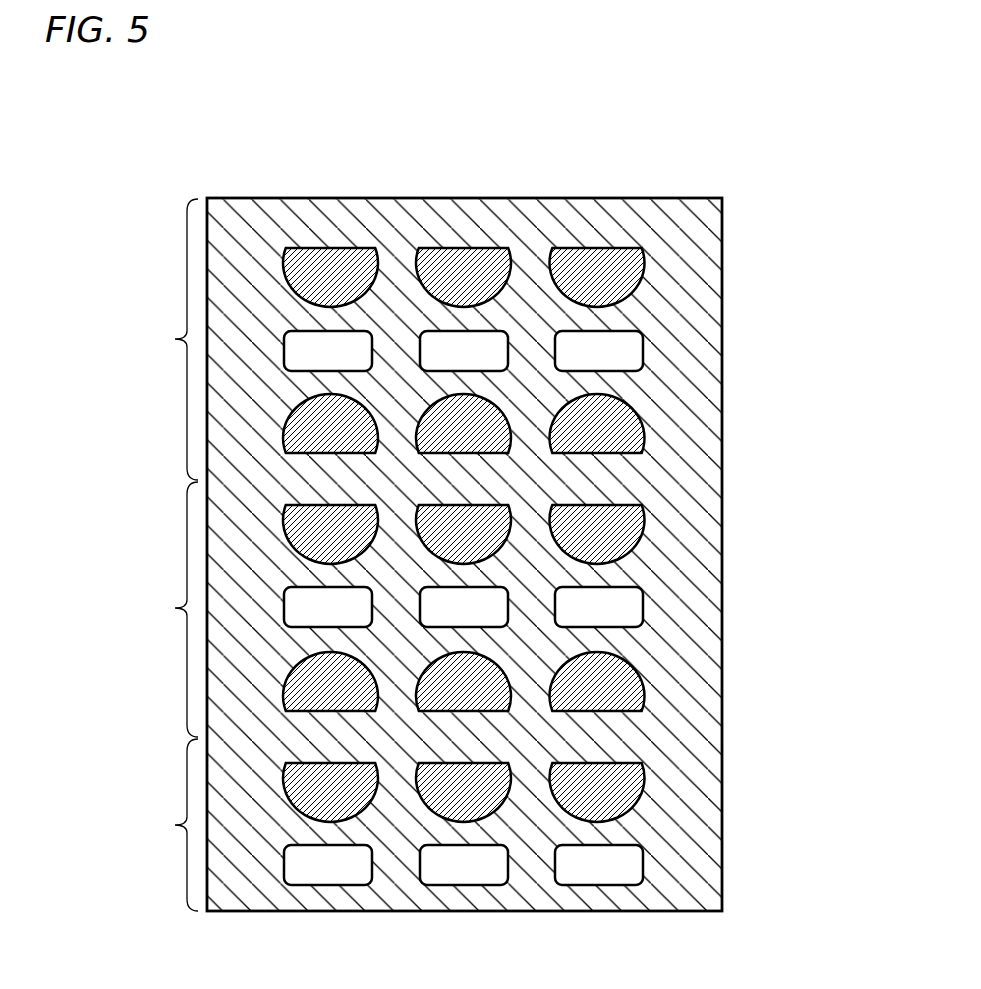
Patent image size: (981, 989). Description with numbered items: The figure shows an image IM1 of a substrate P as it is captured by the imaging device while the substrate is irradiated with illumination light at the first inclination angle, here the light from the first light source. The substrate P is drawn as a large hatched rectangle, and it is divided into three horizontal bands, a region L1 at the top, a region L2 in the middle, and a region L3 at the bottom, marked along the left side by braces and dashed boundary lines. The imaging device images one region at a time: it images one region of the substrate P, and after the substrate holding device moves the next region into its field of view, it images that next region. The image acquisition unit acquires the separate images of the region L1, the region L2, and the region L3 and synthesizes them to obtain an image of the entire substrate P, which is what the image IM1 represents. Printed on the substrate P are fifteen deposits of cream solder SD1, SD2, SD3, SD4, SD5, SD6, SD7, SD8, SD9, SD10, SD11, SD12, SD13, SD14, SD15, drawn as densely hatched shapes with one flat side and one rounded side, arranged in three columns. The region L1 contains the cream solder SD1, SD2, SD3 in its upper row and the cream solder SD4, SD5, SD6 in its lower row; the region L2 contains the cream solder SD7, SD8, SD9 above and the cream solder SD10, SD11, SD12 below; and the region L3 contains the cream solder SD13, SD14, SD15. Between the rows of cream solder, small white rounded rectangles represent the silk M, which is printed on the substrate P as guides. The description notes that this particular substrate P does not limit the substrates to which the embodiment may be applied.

The image IM1 is at (478, 118).
The substrate P is at (282, 198).
The silk M is at (635, 349).
The cream solder SD1 is at (321, 270).
The cream solder SD2 is at (448, 270).
The cream solder SD3 is at (585, 270).
The cream solder SD4 is at (361, 427).
The cream solder SD5 is at (483, 427).
The cream solder SD6 is at (622, 427).
The cream solder SD7 is at (330, 533).
The cream solder SD8 is at (470, 515).
The cream solder SD9 is at (615, 531).
The cream solder SD10 is at (353, 688).
The cream solder SD11 is at (490, 687).
The cream solder SD12 is at (622, 687).
The cream solder SD13 is at (315, 797).
The cream solder SD14 is at (448, 797).
The cream solder SD15 is at (577, 797).
The region L1 is at (207, 198).
The region L2 is at (207, 737).
The region L3 is at (207, 912).